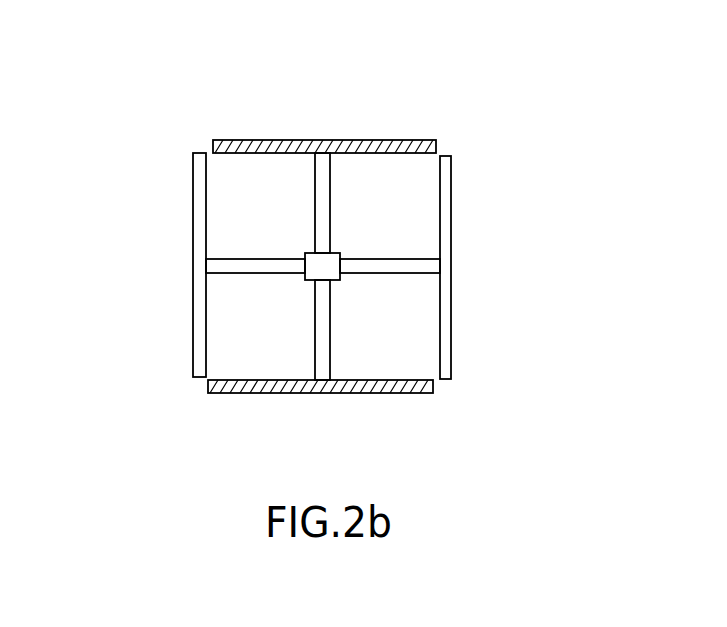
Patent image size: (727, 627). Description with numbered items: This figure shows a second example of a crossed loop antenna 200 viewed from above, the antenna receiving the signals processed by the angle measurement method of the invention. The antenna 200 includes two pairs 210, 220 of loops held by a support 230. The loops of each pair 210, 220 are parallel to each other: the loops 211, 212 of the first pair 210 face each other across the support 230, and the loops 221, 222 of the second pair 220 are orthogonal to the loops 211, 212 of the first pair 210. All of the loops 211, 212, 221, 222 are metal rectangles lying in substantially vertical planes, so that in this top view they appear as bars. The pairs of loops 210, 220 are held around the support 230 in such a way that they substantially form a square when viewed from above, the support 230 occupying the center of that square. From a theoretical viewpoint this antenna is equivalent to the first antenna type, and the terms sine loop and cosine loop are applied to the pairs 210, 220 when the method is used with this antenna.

The antenna 200 is at (185, 393).
The first pair of loops 210 is at (386, 263).
The loop of the first pair 211 is at (283, 140).
The loop of the first pair 212 is at (290, 392).
The second pair of loops 220 is at (319, 201).
The loop of the second pair 221 is at (192, 250).
The loop of the second pair 222 is at (481, 267).
The support 230 is at (325, 225).